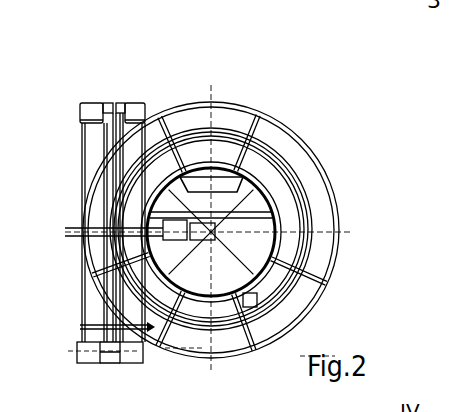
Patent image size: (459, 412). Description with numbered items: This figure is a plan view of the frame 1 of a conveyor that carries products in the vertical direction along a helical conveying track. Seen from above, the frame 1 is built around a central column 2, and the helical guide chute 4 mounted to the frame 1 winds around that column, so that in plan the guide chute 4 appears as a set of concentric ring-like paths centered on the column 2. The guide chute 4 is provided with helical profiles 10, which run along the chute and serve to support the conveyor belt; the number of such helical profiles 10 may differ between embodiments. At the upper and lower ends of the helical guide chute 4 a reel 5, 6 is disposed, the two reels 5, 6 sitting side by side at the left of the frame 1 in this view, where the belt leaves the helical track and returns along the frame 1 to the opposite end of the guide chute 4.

The frame 1 is at (230, 94).
The central column 2 is at (199, 170).
The helical guide chute 4 is at (318, 163).
The reel 5 is at (95, 107).
The reel 6 is at (75, 350).
The helical profiles 10 is at (270, 176).